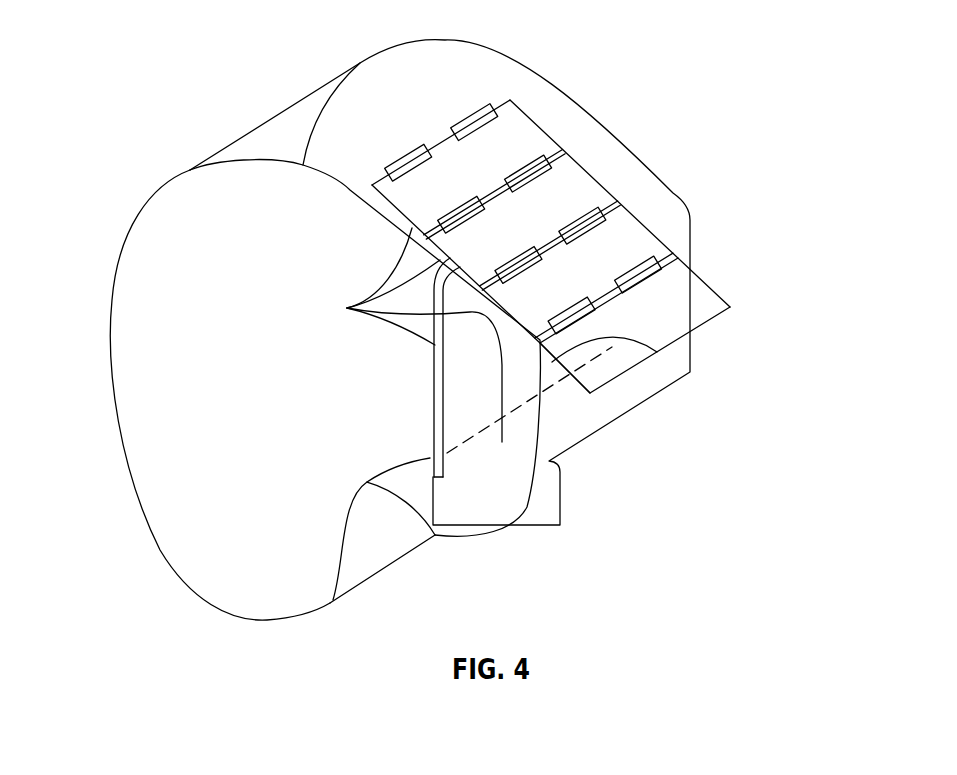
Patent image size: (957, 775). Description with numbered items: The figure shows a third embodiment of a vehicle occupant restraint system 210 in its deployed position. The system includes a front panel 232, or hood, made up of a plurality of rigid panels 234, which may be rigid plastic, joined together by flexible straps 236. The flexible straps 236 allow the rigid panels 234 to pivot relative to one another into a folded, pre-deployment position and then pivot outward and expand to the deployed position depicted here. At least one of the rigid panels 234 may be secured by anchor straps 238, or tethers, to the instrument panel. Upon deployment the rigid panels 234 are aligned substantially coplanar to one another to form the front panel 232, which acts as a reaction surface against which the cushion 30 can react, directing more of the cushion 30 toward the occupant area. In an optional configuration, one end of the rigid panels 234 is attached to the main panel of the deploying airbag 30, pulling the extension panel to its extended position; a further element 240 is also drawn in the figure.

The cushion 30 is at (110, 376).
The vehicle occupant restraint system 210 is at (789, 67).
The front panel 232 is at (812, 248).
The rigid panels 234 is at (515, 276).
The flexible straps 236 is at (465, 212).
The anchor straps 238 is at (423, 417).
The electrode panel 240 is at (688, 342).